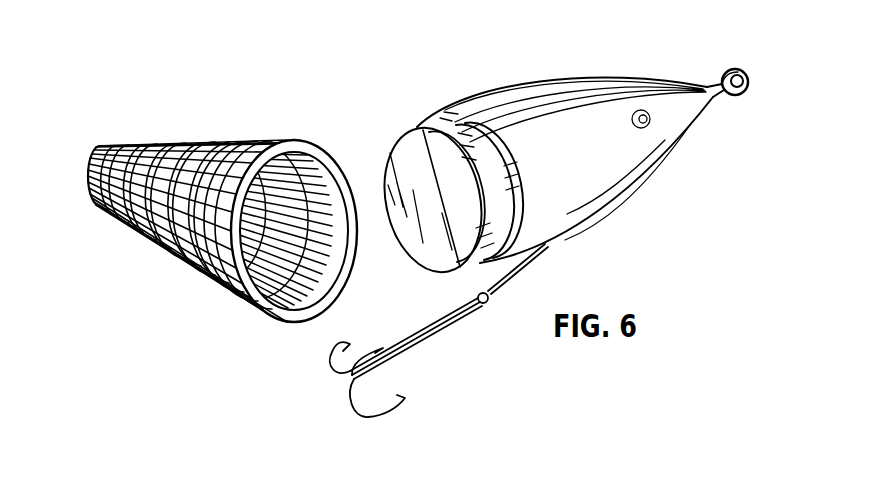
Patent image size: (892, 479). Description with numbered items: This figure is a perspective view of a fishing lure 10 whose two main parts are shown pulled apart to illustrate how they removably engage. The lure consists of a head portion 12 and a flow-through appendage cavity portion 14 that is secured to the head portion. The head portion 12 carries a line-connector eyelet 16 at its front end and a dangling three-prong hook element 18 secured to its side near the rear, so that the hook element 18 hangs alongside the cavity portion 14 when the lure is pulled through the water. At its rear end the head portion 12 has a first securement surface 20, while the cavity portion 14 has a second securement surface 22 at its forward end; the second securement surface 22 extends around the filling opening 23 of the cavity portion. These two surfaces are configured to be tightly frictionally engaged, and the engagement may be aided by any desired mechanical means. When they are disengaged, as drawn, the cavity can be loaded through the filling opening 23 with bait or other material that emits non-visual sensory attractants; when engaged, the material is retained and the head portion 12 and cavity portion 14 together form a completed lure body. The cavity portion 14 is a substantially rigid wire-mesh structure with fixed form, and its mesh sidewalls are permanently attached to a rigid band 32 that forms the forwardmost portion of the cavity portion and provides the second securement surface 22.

The fishing lure 10 is at (352, 113).
The head portion 12 is at (612, 190).
The flow-through appendage cavity portion 14 is at (140, 237).
The line-connector eyelet 16 is at (745, 92).
The three-prong hook element 18 is at (408, 360).
The first securement surface 20 is at (477, 155).
The second securement surface 22 is at (323, 258).
The filling opening 23 is at (313, 274).
The rigid band 32 is at (220, 233).